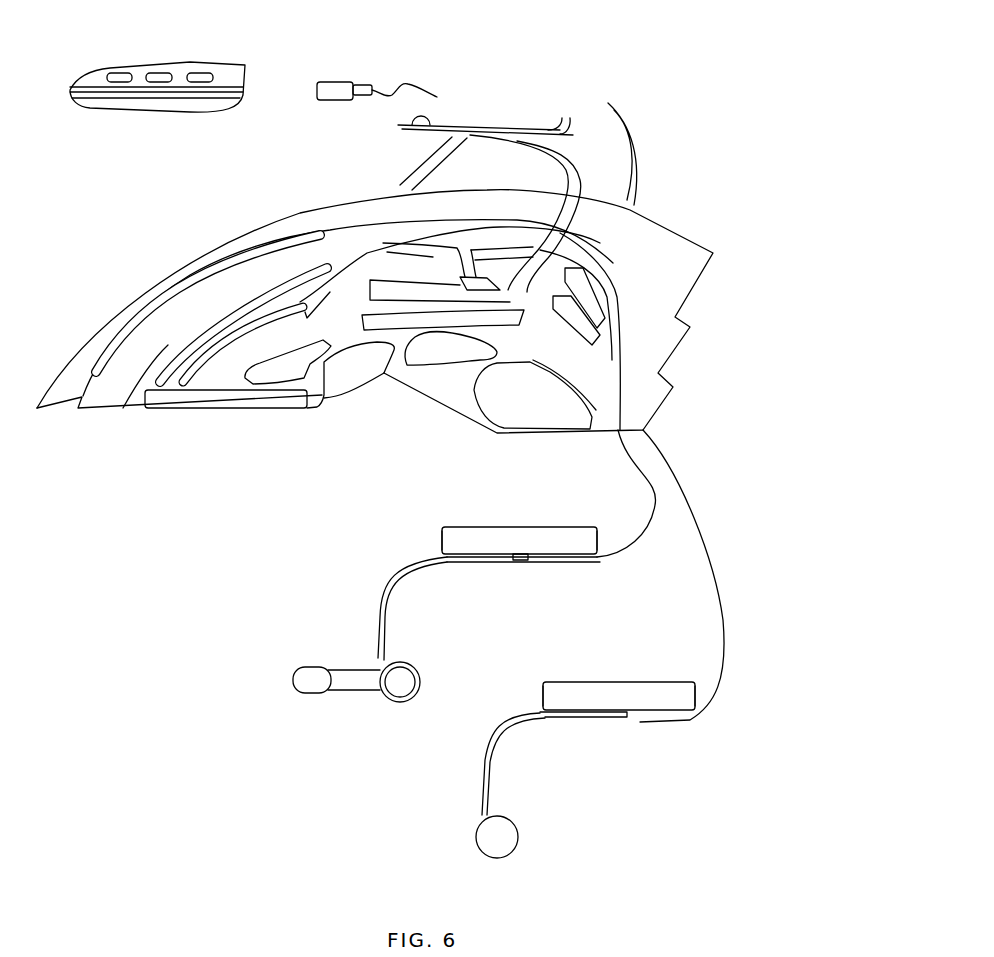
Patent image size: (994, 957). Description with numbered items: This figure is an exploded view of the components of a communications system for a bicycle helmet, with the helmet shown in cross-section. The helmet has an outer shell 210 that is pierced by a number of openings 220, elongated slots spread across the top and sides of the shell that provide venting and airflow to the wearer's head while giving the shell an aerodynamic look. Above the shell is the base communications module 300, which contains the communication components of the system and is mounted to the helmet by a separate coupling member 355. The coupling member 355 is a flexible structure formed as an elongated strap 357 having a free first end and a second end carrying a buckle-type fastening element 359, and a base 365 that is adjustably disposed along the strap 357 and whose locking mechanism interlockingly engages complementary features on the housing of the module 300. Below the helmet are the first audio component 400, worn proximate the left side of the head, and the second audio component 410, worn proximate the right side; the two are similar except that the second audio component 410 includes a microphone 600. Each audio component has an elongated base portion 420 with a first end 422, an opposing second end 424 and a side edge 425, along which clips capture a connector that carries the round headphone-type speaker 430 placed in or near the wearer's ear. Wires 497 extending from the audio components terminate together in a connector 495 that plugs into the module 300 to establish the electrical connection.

The outer shell 210 is at (112, 318).
The openings 220 is at (320, 273).
The base communications module 300 is at (131, 49).
The coupling member 355 is at (483, 120).
The strap 357 is at (584, 175).
The fastening element 359 is at (410, 283).
The base 365 is at (539, 127).
The first audio component 400 is at (387, 542).
The second audio component 410 is at (378, 595).
The base portion 420 is at (523, 535).
The first end 422 is at (438, 533).
The second end 424 is at (600, 540).
The side edge 425 is at (517, 565).
The speaker 430 is at (403, 680).
The connector 495 is at (340, 73).
The wires 497 is at (702, 523).
The microphone 600 is at (327, 670).